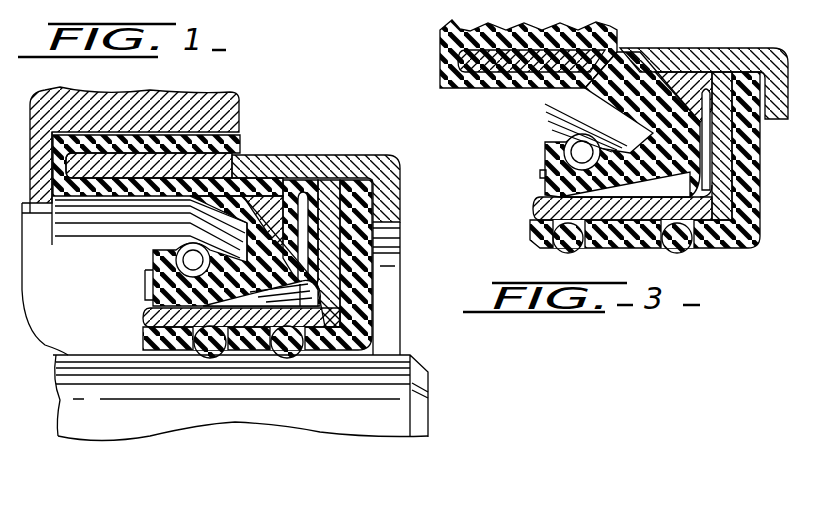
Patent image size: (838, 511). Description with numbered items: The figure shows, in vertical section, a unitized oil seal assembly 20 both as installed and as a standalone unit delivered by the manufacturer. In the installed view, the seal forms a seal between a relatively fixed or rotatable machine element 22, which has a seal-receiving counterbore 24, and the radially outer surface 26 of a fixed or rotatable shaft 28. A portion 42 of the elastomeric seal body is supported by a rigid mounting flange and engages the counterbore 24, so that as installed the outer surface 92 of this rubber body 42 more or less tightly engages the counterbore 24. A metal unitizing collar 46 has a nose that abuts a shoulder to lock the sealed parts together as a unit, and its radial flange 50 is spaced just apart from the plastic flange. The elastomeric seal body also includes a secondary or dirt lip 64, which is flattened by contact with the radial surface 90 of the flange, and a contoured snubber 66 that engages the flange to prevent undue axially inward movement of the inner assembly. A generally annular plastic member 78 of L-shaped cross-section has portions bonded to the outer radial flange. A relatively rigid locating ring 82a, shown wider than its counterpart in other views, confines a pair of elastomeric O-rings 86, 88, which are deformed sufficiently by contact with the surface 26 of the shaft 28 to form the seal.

In FIG. 1, the seal assembly 20 is at (328, 150).
In FIG. 1, the machine element 22 is at (228, 108).
In FIG. 1, the seal-receiving counterbore 24 is at (233, 152).
In FIG. 1, the radially outer surface of shaft 26 is at (118, 357).
In FIG. 1, the shaft 28 is at (154, 427).
In FIG. 3, the portion of elastomeric seal body 42 is at (440, 39).
In FIG. 3, the metal unitizing collar 46 is at (686, 45).
In FIG. 3, the radial flange 50 is at (788, 119).
In FIG. 3, the dirt lip 64 is at (705, 160).
In FIG. 3, the snubber 66 is at (695, 100).
In FIG. 3, the annular plastic member 78 is at (748, 143).
In FIG. 3, the locating ring 82a is at (617, 246).
In FIG. 1, the O-ring 86 is at (290, 352).
In FIG. 3, the O-ring 86 is at (684, 248).
In FIG. 1, the O-ring 88 is at (216, 352).
In FIG. 3, the O-ring 88 is at (566, 248).
In FIG. 3, the radial surface 90 is at (713, 196).
In FIG. 3, the outer surface of rubber body 92 is at (545, 28).